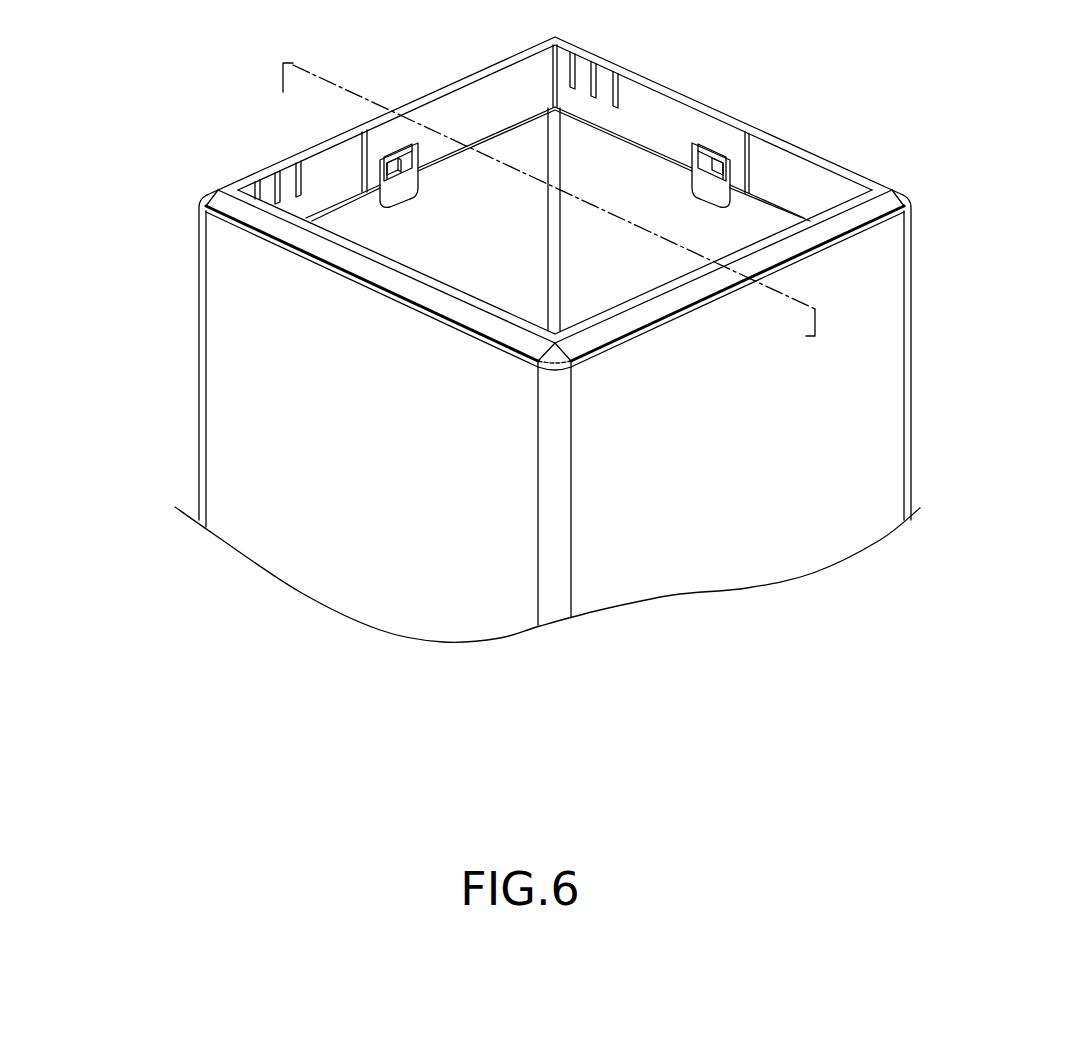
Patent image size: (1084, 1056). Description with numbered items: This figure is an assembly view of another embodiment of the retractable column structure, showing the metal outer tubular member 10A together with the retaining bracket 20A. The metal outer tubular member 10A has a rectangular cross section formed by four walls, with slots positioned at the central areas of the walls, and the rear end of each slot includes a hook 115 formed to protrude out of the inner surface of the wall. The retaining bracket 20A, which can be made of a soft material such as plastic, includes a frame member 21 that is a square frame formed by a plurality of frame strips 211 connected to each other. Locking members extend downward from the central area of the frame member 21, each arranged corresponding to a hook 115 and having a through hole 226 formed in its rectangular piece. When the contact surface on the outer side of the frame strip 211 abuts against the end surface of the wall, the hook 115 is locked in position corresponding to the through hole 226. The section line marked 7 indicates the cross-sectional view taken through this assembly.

The metal outer tubular member 10A is at (161, 373).
The retaining bracket 20A is at (805, 142).
The frame member 21 is at (490, 200).
The frame strip 211 is at (264, 169).
The through hole 226 is at (407, 152).
The hook 115 is at (390, 166).
The section line 7- 7 is at (281, 91).